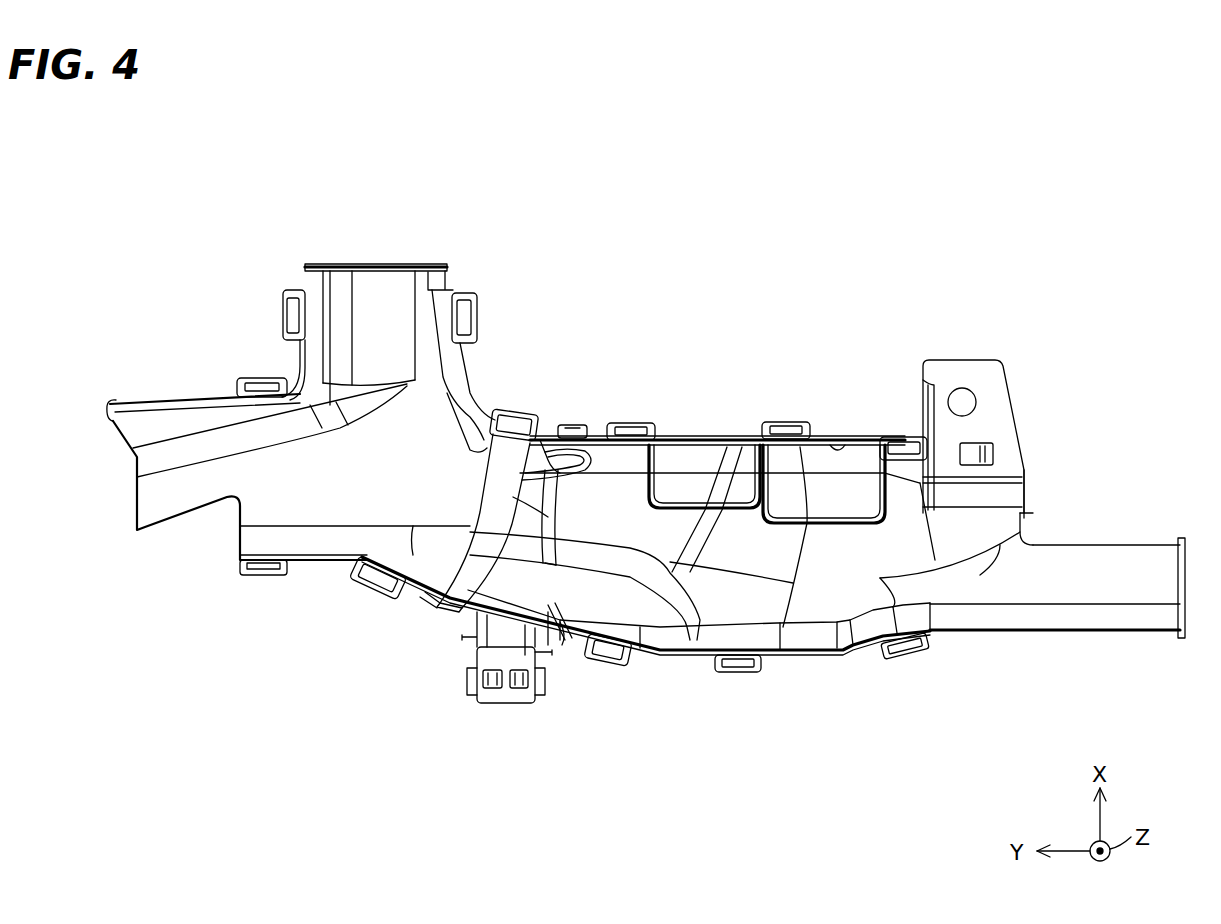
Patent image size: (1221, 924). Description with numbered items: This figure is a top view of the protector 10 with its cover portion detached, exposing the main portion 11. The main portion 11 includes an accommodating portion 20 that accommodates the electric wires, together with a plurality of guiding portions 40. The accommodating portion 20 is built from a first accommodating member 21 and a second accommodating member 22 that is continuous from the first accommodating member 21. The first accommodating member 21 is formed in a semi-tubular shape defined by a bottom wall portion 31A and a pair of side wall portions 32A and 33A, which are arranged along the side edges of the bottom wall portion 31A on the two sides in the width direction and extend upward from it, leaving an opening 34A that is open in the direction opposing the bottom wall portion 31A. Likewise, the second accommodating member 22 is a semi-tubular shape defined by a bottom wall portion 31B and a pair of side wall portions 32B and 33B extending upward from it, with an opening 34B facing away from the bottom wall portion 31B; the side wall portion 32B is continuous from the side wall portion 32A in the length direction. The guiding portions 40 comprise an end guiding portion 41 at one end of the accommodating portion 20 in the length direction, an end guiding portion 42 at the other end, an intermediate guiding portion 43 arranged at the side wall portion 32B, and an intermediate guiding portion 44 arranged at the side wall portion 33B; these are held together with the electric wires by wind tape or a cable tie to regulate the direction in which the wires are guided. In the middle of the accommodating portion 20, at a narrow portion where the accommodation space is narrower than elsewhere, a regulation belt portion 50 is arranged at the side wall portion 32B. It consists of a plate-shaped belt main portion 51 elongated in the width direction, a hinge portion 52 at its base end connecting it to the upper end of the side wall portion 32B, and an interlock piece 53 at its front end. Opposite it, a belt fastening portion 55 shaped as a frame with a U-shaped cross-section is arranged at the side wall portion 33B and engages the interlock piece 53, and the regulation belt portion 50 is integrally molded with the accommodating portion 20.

The intake duct assembly 10 is at (345, 186).
The main portion 11 is at (811, 657).
The accommodating portion 20 is at (768, 648).
The first accommodating member 21 is at (868, 658).
The second accommodating member 22 is at (571, 646).
The bottom wall portion 31A is at (1020, 532).
The bottom wall portion 31B is at (613, 482).
The side wall portion 32A is at (848, 656).
The side wall portion 32B is at (410, 592).
The side wall portion 33A is at (857, 448).
The side wall portion 33B is at (640, 422).
The opening 34A is at (833, 450).
The opening 34B is at (560, 648).
The guiding portions 40 is at (649, 518).
The end guiding portion 41 is at (1128, 638).
The end guiding portion 42 is at (192, 510).
The intermediate guiding portion 43 is at (516, 706).
The intermediate guiding portion 44 is at (320, 281).
The regulation belt portion 50 is at (480, 498).
The belt main portion 51 is at (540, 507).
The hinge portion 52 is at (435, 612).
The interlock piece 53 is at (525, 415).
The belt fastening portion 55 is at (486, 408).